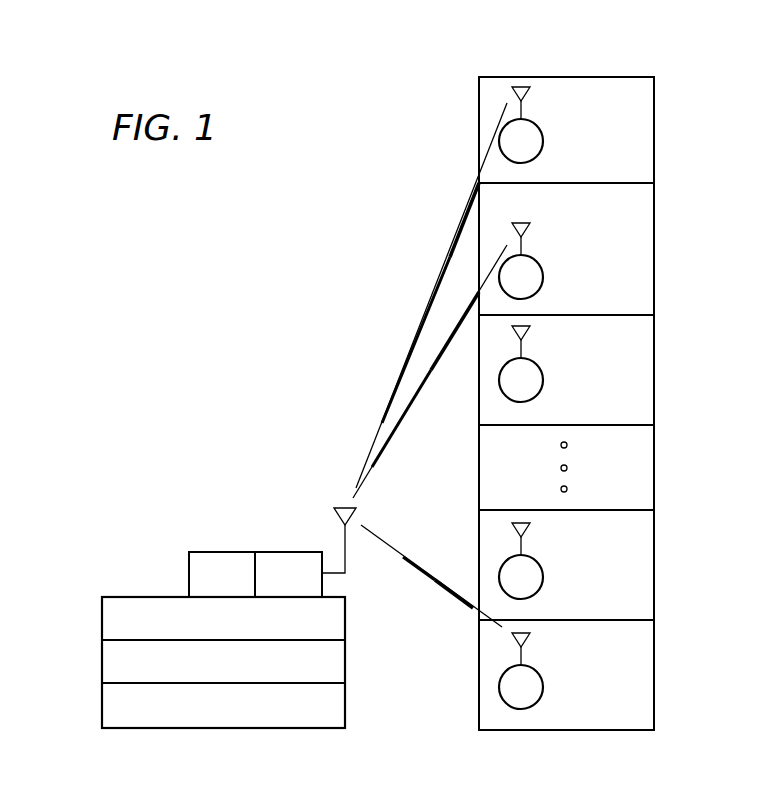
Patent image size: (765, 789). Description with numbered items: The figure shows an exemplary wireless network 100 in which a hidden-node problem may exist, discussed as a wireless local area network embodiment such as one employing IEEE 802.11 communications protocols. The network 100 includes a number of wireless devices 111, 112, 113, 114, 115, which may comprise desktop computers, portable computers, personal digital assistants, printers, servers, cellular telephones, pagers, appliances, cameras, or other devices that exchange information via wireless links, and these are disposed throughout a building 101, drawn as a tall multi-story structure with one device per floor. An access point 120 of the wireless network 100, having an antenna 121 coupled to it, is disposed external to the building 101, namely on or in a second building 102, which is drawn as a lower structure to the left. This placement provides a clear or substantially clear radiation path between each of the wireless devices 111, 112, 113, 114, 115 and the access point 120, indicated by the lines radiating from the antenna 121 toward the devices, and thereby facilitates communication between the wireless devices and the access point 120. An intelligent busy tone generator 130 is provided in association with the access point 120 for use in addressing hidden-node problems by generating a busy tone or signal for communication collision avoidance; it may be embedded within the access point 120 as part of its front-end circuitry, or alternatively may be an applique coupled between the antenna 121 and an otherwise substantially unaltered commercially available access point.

The wireless network 100 is at (298, 241).
The building 101 is at (577, 76).
The building 102 is at (102, 662).
The wireless device 111 is at (544, 140).
The wireless device 112 is at (544, 276).
The wireless device 113 is at (544, 379).
The wireless device 114 is at (544, 577).
The wireless device 115 is at (544, 687).
The access point 120 is at (231, 472).
The antenna 121 is at (342, 507).
The intelligent busy tone generator 130 is at (287, 552).